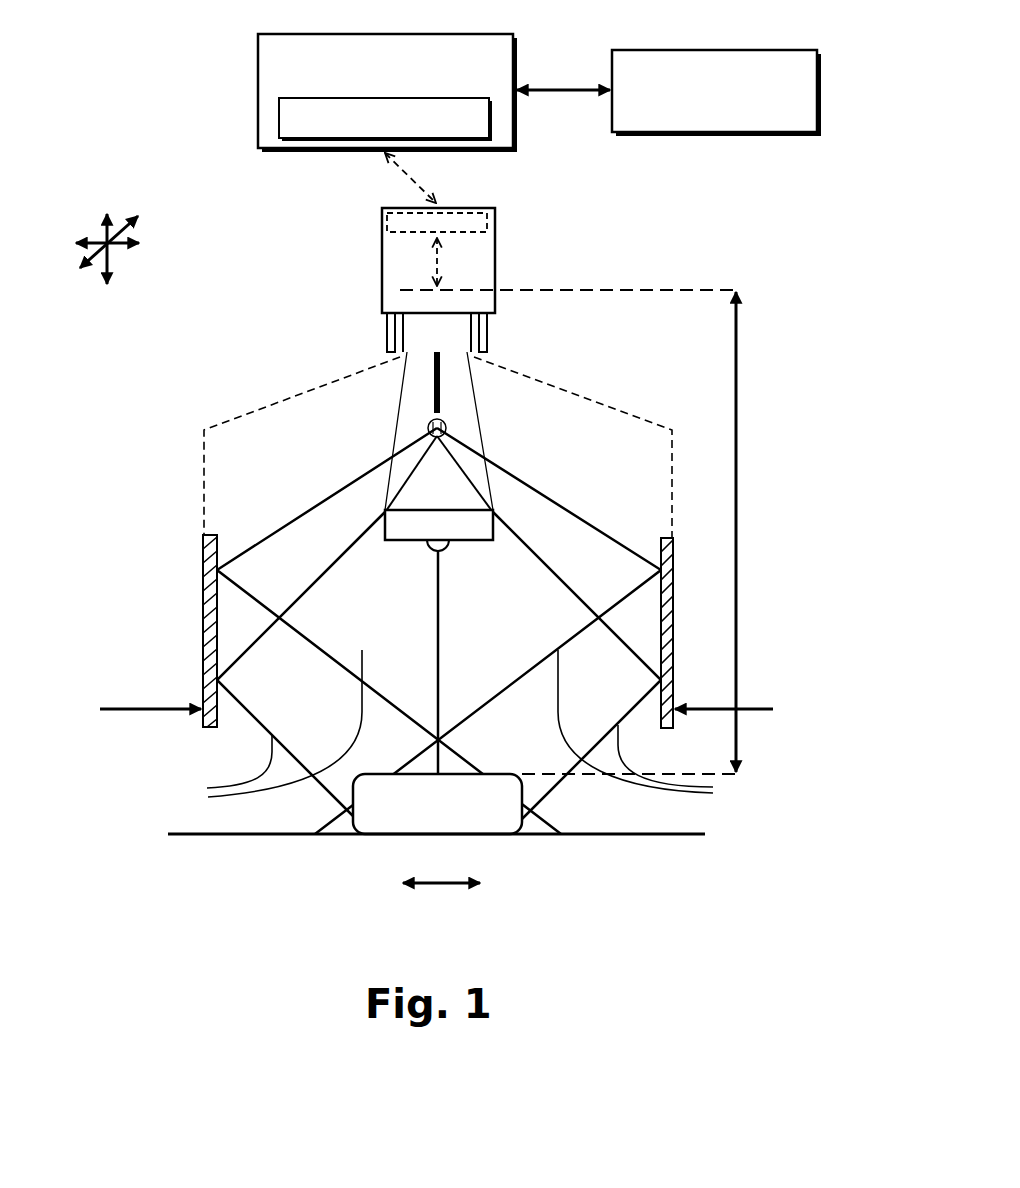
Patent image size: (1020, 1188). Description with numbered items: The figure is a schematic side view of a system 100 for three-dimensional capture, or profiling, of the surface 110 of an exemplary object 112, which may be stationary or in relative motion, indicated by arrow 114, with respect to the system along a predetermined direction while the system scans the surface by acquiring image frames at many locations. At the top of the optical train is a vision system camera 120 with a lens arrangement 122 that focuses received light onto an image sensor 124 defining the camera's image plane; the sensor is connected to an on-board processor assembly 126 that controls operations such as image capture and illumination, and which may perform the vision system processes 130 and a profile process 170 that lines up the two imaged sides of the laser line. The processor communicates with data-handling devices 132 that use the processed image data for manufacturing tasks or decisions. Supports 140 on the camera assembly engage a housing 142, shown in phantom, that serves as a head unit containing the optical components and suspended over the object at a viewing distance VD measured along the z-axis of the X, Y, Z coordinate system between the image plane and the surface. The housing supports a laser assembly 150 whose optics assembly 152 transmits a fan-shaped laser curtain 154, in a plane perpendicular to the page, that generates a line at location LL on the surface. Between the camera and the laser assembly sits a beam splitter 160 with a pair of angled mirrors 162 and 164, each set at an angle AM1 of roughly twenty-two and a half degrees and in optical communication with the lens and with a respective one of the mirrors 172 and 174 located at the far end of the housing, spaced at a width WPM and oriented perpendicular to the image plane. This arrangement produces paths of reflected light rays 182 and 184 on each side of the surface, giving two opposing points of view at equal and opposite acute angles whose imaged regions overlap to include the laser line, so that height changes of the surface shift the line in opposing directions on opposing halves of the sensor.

The system 100 is at (730, 230).
The surface 110 is at (503, 768).
The object 112 is at (527, 792).
The arrow 114 is at (440, 886).
The vision system camera 120 is at (497, 275).
The lens arrangement 122 is at (408, 356).
The image sensor 124 is at (410, 290).
The processor assembly 126 is at (495, 216).
The vision system processes 130 is at (262, 80).
The data-handling devices 132 is at (782, 121).
The supports 140 is at (388, 332).
The housing 142 is at (560, 380).
The laser assembly 150 is at (420, 510).
The optics assembly 152 is at (436, 552).
The fan-shaped laser curtain 154 is at (437, 596).
The beam splitter 160 is at (442, 460).
The angled mirror 162 is at (403, 462).
The angled mirror 164 is at (480, 484).
The profile process 170 is at (280, 110).
The mirror 172 is at (201, 645).
The mirror 174 is at (668, 573).
The reflected light rays 182 is at (266, 727).
The reflected light rays 184 is at (653, 725).
The angle AM1 is at (424, 420).
The line location LL is at (445, 778).
The viewing distance VD is at (737, 620).
The width WPM is at (752, 709).
The x-axis X is at (104, 249).
The y-axis Y is at (113, 248).
The z-axis Z is at (112, 266).